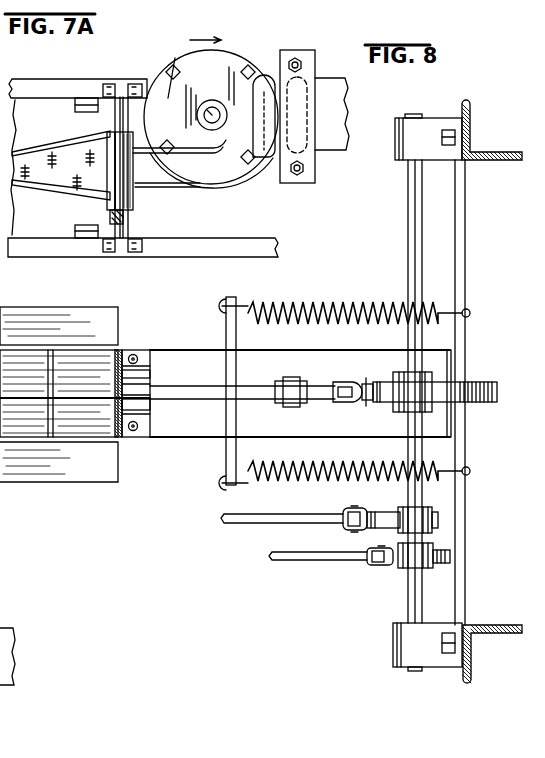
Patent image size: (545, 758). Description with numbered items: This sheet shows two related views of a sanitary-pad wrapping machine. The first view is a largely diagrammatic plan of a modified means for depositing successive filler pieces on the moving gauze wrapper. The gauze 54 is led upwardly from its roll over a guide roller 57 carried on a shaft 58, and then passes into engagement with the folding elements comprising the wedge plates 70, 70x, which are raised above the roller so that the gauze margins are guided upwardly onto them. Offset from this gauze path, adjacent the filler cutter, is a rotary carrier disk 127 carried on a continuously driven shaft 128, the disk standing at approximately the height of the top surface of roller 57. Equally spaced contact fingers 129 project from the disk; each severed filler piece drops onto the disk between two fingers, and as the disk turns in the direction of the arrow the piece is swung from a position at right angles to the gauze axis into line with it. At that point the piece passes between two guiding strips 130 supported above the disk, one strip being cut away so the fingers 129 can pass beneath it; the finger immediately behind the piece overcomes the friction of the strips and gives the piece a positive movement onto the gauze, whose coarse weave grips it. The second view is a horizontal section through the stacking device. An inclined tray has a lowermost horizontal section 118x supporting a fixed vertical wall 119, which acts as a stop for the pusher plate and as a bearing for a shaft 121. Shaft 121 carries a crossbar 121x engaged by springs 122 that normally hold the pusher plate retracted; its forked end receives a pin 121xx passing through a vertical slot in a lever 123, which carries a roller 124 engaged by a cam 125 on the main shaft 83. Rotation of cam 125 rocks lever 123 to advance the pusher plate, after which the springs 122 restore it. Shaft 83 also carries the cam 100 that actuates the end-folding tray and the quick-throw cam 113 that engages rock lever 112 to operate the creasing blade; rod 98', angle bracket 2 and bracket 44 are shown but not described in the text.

In FIG. 7A, the wedge plate 70 is at (33, 167).
In FIG. 7A, the guide roller 57 is at (117, 124).
In FIG. 7A, the wedge plate 70x is at (61, 194).
In FIG. 7A, the gauze 54 is at (100, 178).
In FIG. 7A, the shaft 58 is at (128, 222).
In FIG. 7A, the rotary carrier disk 127 is at (202, 111).
In FIG. 7A, the driven shaft 128 is at (213, 112).
In FIG. 7A, the contact fingers 129 is at (250, 68).
In FIG. 7A, the guiding strips 130 is at (181, 186).
In FIG. 7A, the bracket 44 is at (307, 63).
In FIG. 8, the angle bracket 2 is at (505, 151).
In FIG. 8, the shaft 83 is at (416, 261).
In FIG. 8, the horizontal section 118x is at (59, 394).
In FIG. 8, the fixed vertical wall 119 is at (124, 351).
In FIG. 8, the shaft 121 is at (178, 391).
In FIG. 8, the crossbar 121x is at (237, 333).
In FIG. 8, the pin 121xx is at (352, 380).
In FIG. 8, the springs 122 is at (362, 297).
In FIG. 8, the lever 123 is at (368, 399).
In FIG. 8, the roller 124 is at (374, 386).
In FIG. 8, the cam 125 is at (460, 389).
In FIG. 8, the rod 98' is at (294, 526).
In FIG. 8, the cam 100 is at (380, 515).
In FIG. 8, the rock lever 112 is at (322, 562).
In FIG. 8, the quick-throw cam 113 is at (443, 566).